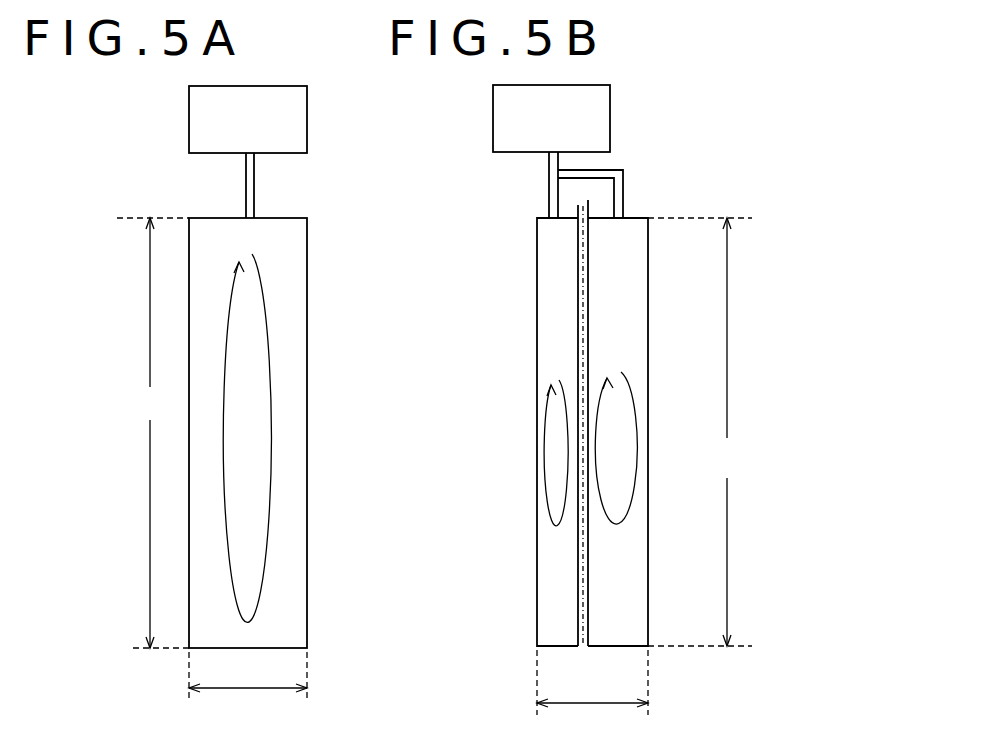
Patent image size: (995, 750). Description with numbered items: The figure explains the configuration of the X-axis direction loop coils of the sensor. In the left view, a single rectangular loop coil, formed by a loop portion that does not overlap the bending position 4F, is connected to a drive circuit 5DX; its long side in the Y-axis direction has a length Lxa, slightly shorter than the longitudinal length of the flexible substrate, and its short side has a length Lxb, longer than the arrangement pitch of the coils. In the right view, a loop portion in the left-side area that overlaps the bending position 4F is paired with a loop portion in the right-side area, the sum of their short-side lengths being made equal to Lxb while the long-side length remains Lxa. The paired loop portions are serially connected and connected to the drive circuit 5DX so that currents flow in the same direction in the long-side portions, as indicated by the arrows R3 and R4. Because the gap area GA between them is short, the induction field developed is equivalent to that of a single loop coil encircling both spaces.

In FIG. 5A, the drive circuit 5DX is at (307, 115).
In FIG. 5B, the drive circuit 5DX is at (610, 108).
In FIG. 5B, the gap area GA is at (633, 433).
In FIG. 5B, the bending position 4F is at (583, 648).
In FIG. 5B, the arrow R3 is at (548, 409).
In FIG. 5B, the arrow R4 is at (635, 407).
In FIG. 5A, the long-side length Lxa is at (153, 433).
In FIG. 5B, the long-side length Lxa is at (700, 432).
In FIG. 5A, the short-side length Lxb is at (248, 688).
In FIG. 5B, the short-side length Lxb is at (592, 689).